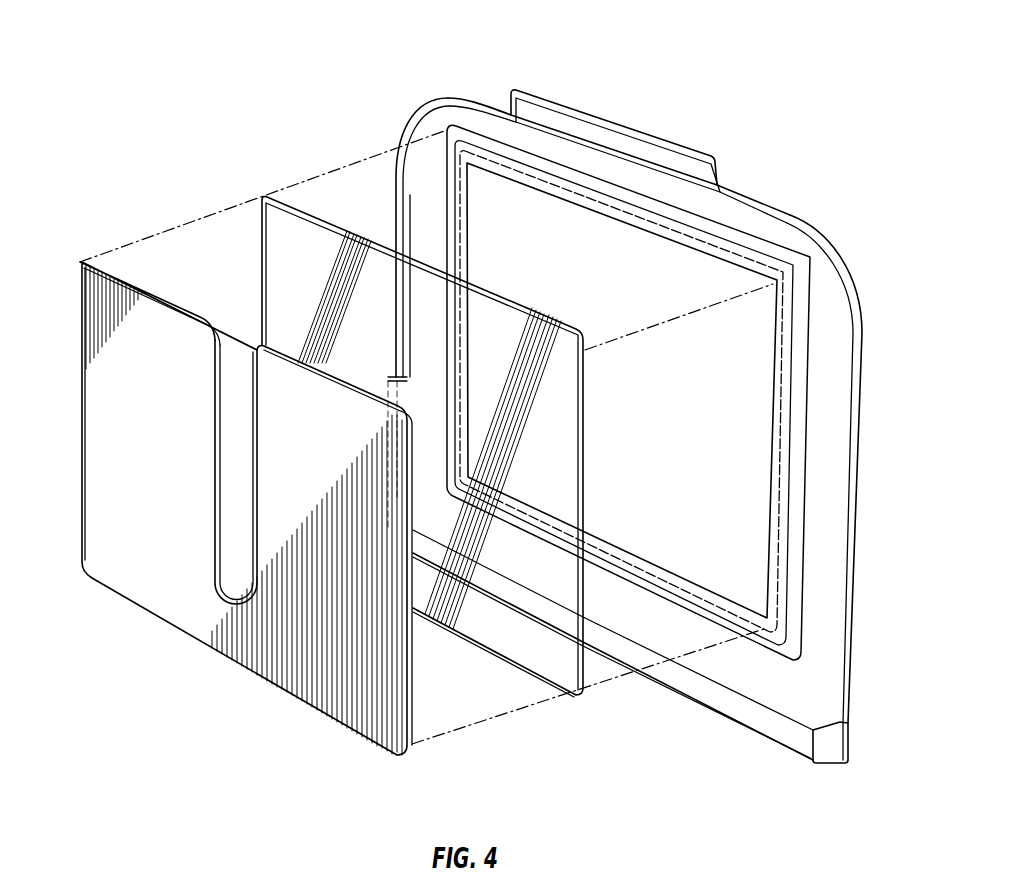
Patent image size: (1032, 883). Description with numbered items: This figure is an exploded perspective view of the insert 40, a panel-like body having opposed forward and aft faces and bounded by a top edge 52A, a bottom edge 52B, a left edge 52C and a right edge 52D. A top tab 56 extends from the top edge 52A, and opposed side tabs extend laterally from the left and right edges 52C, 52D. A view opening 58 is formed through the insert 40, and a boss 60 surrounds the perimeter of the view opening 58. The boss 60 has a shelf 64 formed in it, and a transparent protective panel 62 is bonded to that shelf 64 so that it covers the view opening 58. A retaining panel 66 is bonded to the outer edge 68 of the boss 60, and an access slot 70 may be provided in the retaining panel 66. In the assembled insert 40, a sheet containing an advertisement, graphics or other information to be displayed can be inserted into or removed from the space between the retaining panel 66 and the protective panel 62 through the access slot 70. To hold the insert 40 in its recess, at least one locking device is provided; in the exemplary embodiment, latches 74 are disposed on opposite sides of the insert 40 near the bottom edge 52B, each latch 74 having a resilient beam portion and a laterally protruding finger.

The insert 40 is at (652, 81).
The top edge 52A is at (477, 97).
The bottom edge 52B is at (725, 722).
The left edge 52C is at (858, 312).
The right edge 52D is at (388, 130).
The top tab 56 is at (550, 113).
The view opening 58 is at (672, 265).
The boss 60 is at (788, 257).
The transparent protective panel 62 is at (277, 237).
The shelf 64 is at (620, 218).
The retaining panel 66 is at (100, 388).
The outer edge 68 is at (793, 435).
The access slot 70 is at (223, 350).
The latch 74 is at (831, 752).